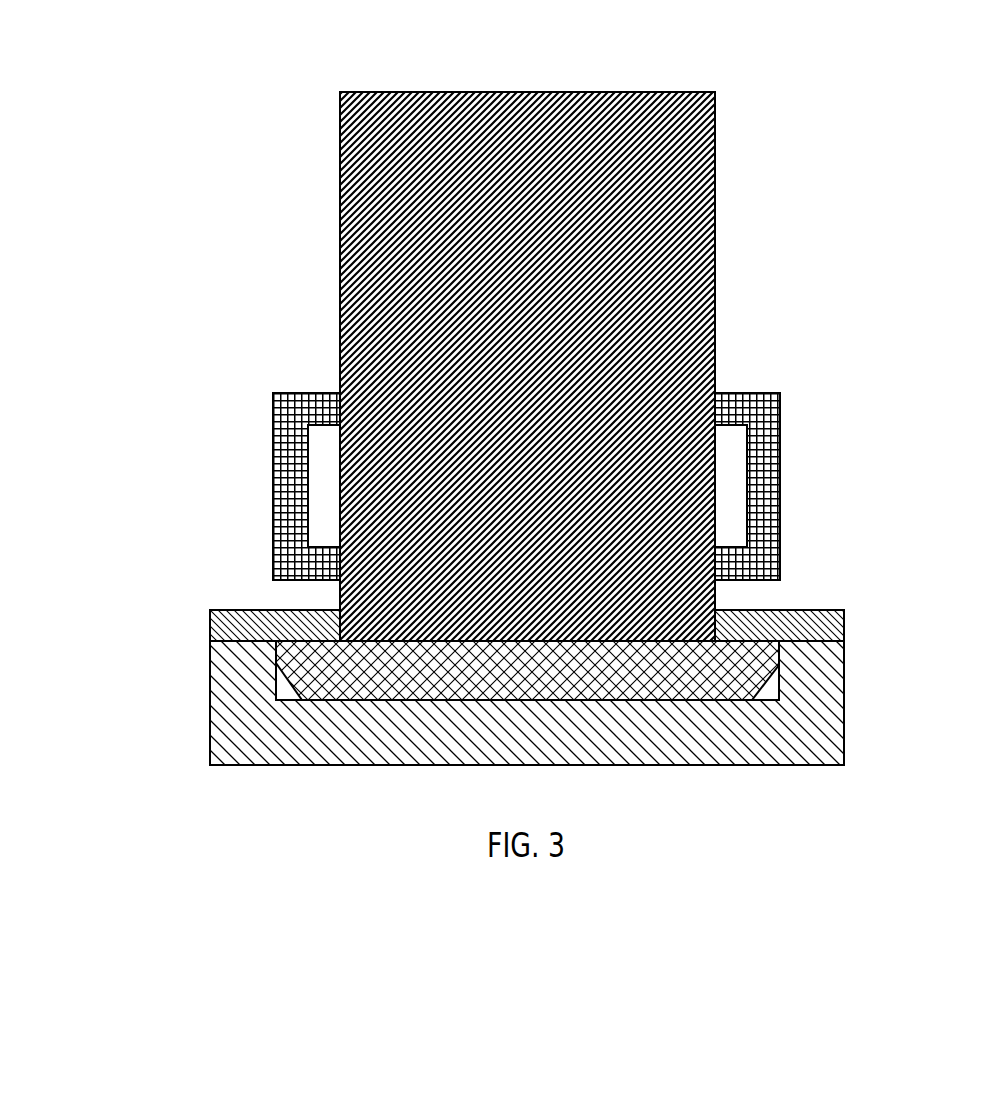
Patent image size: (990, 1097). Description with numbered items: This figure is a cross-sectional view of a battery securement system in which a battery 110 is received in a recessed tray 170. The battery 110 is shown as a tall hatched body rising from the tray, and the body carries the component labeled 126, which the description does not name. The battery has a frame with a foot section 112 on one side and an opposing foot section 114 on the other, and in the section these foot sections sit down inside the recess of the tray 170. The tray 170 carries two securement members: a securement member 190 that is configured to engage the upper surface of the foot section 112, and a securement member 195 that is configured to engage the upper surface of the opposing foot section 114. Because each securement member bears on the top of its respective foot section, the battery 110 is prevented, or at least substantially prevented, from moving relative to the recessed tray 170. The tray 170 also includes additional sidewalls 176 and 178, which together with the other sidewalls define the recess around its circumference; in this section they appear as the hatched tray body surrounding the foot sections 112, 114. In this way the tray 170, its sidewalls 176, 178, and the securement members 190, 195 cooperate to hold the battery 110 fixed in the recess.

The battery 110 is at (569, 336).
The magnet body 126 is at (708, 188).
The securement member 195 is at (258, 627).
The securement member 190 is at (797, 625).
The opposing foot section 114 is at (535, 669).
The foot section 112 is at (747, 678).
The sidewall 178 is at (230, 727).
The sidewall 176 is at (830, 735).
The recessed tray 170 is at (539, 720).